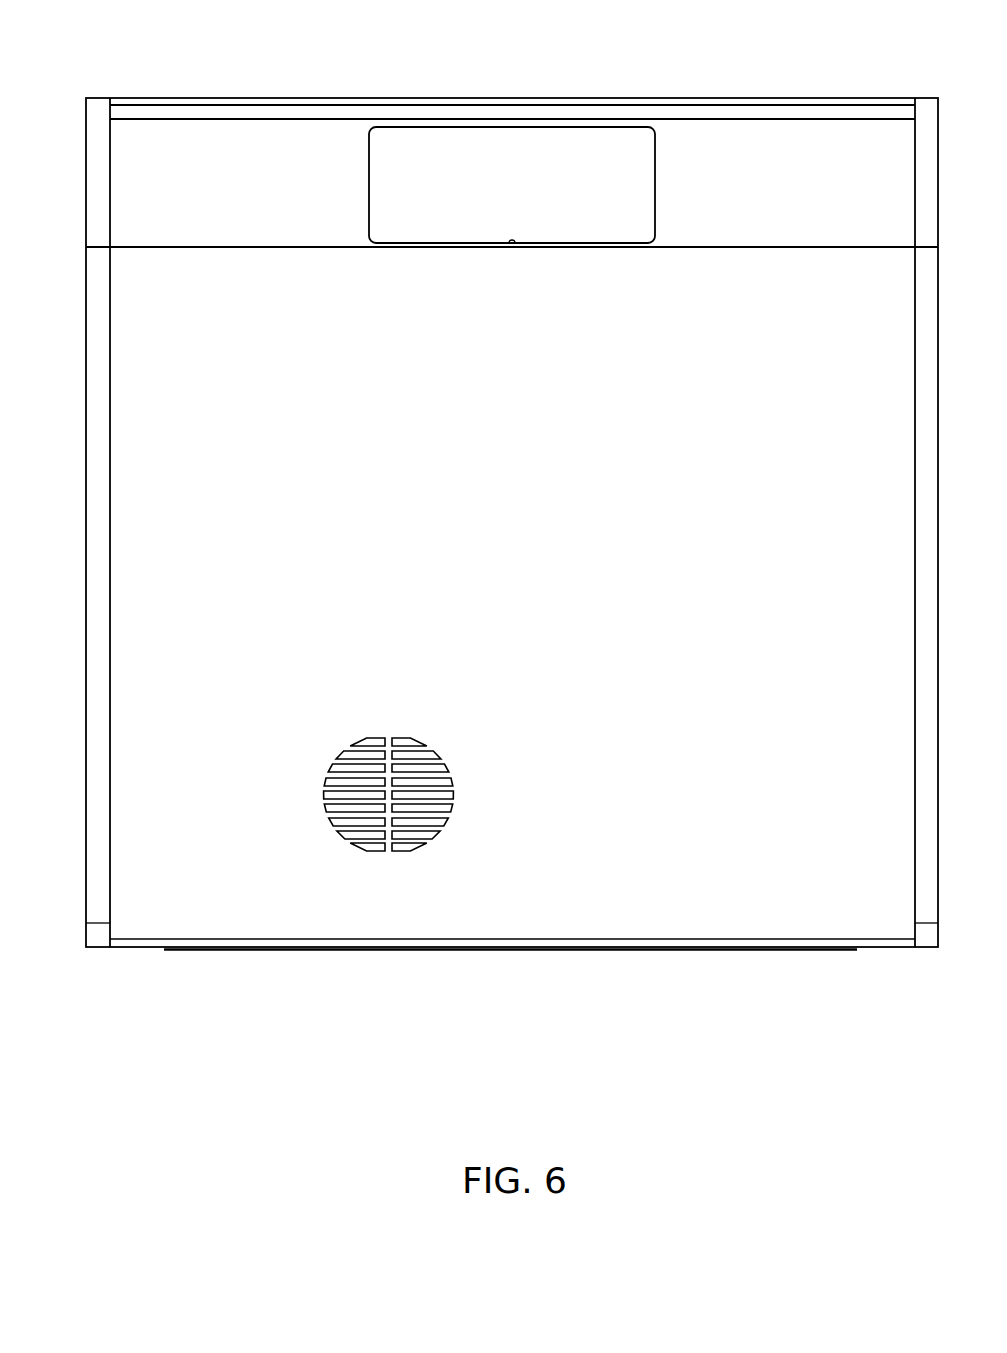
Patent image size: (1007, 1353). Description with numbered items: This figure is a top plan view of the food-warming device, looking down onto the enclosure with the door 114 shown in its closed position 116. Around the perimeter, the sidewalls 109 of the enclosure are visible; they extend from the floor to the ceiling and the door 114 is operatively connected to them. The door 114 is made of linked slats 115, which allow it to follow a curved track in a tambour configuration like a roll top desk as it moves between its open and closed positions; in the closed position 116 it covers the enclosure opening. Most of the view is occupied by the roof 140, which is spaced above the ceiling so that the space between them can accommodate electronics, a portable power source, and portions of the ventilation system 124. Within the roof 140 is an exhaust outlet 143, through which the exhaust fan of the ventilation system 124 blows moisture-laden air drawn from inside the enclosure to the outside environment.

The sidewalls 109 is at (85, 520).
The door 114 is at (771, 94).
The linked slats 115 is at (836, 110).
The closed position 116 is at (579, 70).
The ventilation system 124 is at (380, 776).
The roof 140 is at (240, 410).
The exhaust outlet 143 is at (447, 753).